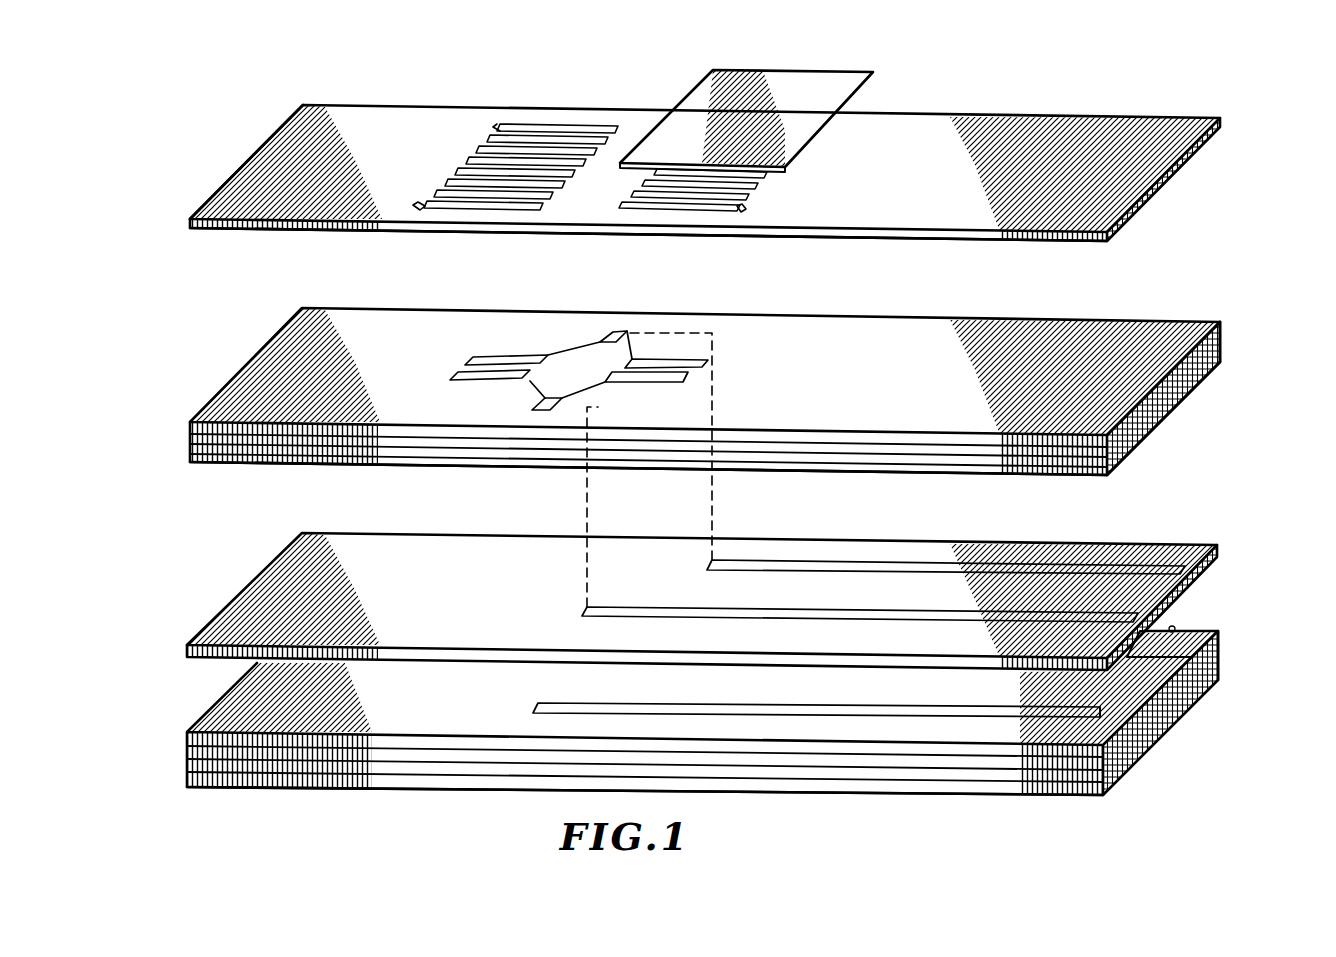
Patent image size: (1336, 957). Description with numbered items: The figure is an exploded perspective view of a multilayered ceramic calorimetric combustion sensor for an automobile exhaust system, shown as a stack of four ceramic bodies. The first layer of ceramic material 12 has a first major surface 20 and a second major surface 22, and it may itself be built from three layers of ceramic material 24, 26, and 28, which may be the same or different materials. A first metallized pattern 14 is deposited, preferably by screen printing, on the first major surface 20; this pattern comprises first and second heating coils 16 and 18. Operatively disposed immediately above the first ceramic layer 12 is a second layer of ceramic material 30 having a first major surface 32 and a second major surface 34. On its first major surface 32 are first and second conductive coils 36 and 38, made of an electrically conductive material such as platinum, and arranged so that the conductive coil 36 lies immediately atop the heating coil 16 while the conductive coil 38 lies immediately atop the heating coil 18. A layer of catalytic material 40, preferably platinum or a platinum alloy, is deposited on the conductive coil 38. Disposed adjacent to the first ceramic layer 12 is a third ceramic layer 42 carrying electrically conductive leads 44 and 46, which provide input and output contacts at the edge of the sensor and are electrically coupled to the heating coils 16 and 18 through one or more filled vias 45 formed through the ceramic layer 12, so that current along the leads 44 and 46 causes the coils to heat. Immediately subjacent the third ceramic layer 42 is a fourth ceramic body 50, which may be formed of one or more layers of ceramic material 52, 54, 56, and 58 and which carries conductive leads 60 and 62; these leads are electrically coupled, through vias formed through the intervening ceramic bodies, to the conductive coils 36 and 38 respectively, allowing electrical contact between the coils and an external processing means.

The first layer of ceramic material 12 is at (706, 379).
The first metallized pattern 14 is at (530, 383).
The first heating coil 16 is at (548, 355).
The second heating coil 18 is at (603, 387).
The first major surface 20 is at (213, 400).
The second major surface 22 is at (213, 462).
The layer of ceramic material 24 is at (1222, 325).
The layer of ceramic material 26 is at (1224, 336).
The layer of ceramic material 28 is at (1224, 358).
The second layer of ceramic material 30 is at (1232, 118).
The first major surface 32 is at (215, 200).
The second major surface 34 is at (212, 232).
The first conductive coil 36 is at (549, 125).
The second conductive coil 38 is at (654, 207).
The layer of catalytic material 40 is at (802, 92).
The third ceramic layer 42 is at (213, 620).
The electrically conductive lead 44 is at (1095, 615).
The filled via 45 is at (613, 333).
The electrically conductive lead 46 is at (1185, 556).
The fourth ceramic body 50 is at (678, 721).
The layer of ceramic material 52 is at (1196, 633).
The layer of ceramic material 54 is at (1087, 772).
The layer of ceramic material 56 is at (1221, 658).
The layer of ceramic material 58 is at (1093, 796).
The conductive lead 60 is at (1102, 690).
The conductive lead 62 is at (1174, 632).